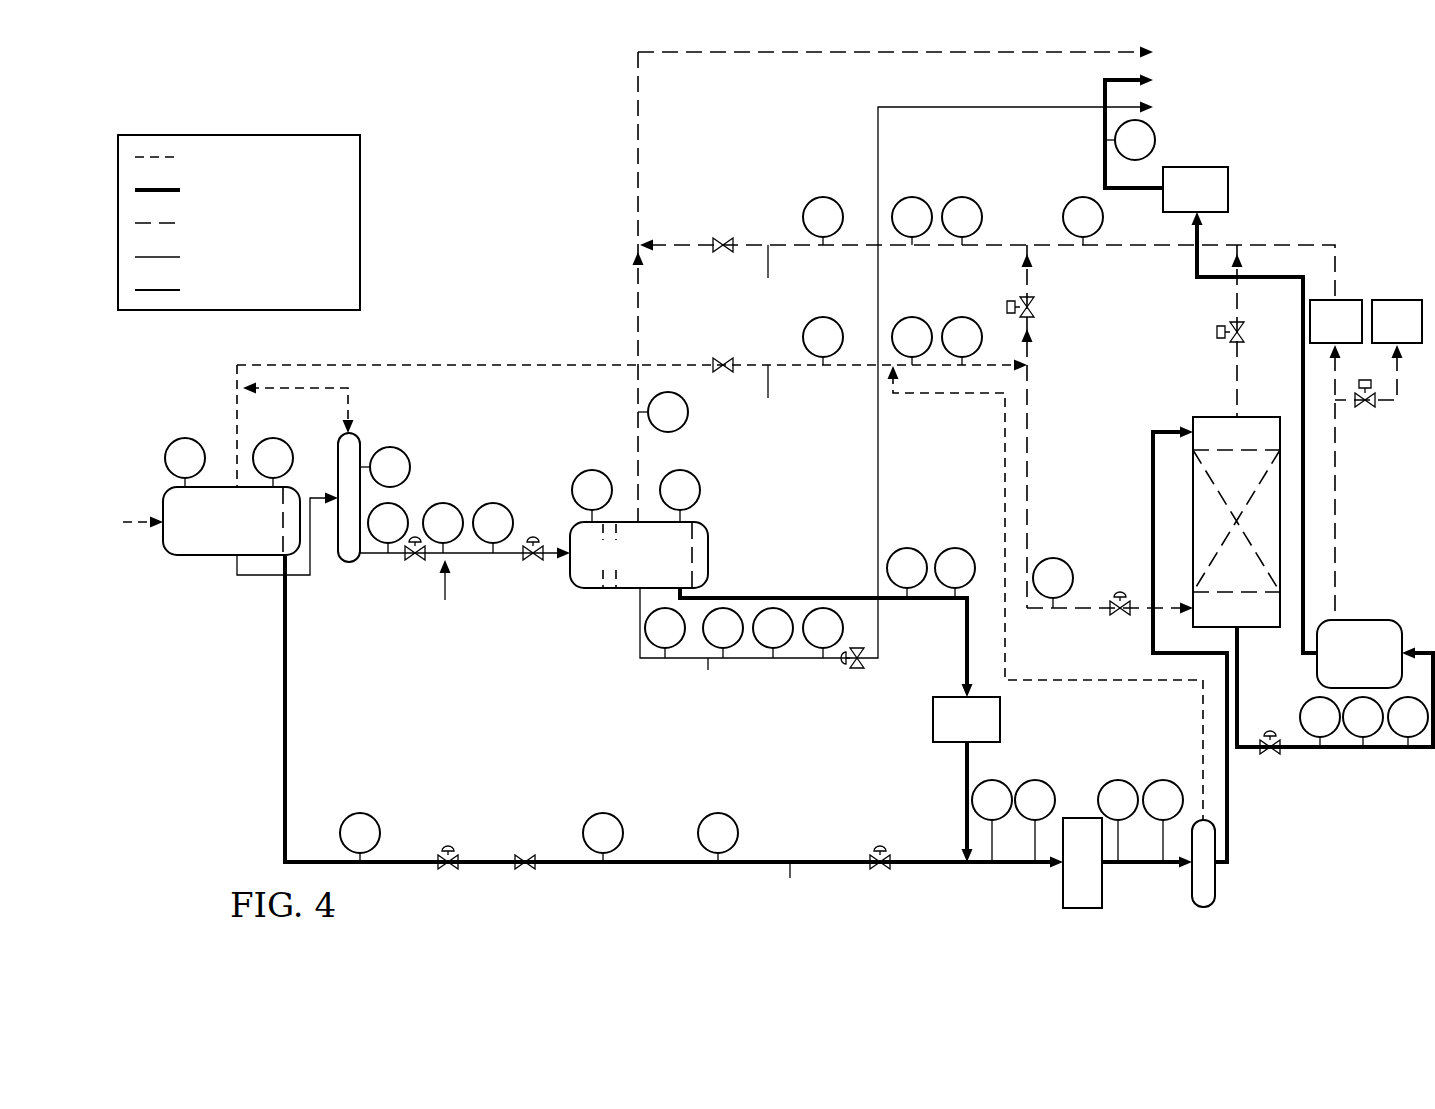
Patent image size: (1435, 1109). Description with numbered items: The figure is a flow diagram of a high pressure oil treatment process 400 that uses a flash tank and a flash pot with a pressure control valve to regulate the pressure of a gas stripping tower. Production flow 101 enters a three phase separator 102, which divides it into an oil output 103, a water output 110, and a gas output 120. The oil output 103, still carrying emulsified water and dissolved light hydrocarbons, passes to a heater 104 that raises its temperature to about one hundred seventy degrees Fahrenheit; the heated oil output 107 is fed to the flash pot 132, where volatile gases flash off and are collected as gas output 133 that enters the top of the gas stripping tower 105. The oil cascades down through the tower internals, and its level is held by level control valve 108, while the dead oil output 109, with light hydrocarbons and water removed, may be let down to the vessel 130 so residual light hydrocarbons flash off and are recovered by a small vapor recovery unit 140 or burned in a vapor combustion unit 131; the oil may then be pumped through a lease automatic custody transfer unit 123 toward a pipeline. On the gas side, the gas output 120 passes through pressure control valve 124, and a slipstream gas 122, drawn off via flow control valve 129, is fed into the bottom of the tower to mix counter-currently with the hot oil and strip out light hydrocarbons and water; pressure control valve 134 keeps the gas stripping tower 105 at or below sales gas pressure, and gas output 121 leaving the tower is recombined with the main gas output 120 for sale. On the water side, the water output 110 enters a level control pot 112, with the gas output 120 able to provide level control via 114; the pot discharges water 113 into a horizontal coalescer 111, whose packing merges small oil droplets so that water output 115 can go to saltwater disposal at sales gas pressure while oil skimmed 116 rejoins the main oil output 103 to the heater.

The high pressure oil treatment process 400 is at (418, 141).
The production flow 101 is at (127, 524).
The three phase separator 102 is at (222, 557).
The oil output 103 is at (285, 710).
The heater 104 is at (1083, 908).
The gas stripping tower 105 is at (1257, 630).
The heated oil output 107 is at (1148, 865).
The level control valve 108 is at (1282, 752).
The oil output 109 is at (1417, 750).
The water output 110 is at (265, 577).
The coalescer 111 is at (612, 589).
The level control pot 112 is at (346, 563).
The water 113 is at (468, 553).
The level control 114 is at (352, 414).
The water output 115 is at (757, 660).
The oil skimmed 116 is at (795, 598).
The gas output 120 is at (450, 365).
The gas output 121 is at (1010, 245).
The slipstream gas 122 is at (1170, 606).
The lease automatic custody transfer unit 123 is at (1105, 168).
The pressure control valve 124 is at (1038, 308).
The flow control valve 129 is at (1118, 600).
The vessel 130 is at (1365, 620).
The vapor combustion unit 131 is at (1400, 300).
The flash pot 132 is at (1218, 880).
The gas output 133 is at (1230, 826).
The pressure control valve 134 is at (1248, 338).
The vapor recovery unit 140 is at (1345, 300).